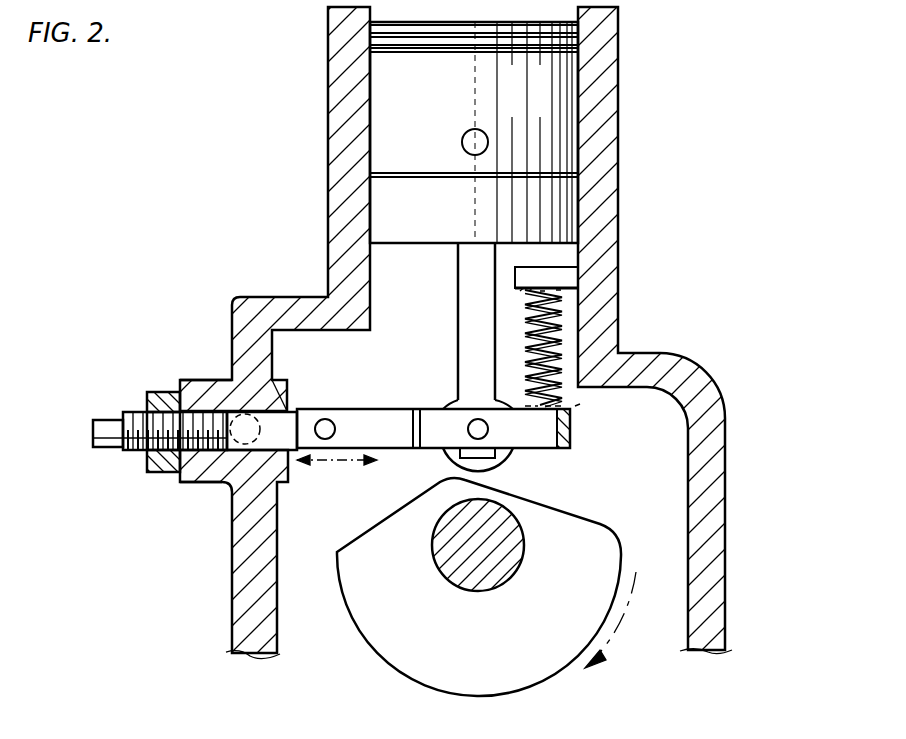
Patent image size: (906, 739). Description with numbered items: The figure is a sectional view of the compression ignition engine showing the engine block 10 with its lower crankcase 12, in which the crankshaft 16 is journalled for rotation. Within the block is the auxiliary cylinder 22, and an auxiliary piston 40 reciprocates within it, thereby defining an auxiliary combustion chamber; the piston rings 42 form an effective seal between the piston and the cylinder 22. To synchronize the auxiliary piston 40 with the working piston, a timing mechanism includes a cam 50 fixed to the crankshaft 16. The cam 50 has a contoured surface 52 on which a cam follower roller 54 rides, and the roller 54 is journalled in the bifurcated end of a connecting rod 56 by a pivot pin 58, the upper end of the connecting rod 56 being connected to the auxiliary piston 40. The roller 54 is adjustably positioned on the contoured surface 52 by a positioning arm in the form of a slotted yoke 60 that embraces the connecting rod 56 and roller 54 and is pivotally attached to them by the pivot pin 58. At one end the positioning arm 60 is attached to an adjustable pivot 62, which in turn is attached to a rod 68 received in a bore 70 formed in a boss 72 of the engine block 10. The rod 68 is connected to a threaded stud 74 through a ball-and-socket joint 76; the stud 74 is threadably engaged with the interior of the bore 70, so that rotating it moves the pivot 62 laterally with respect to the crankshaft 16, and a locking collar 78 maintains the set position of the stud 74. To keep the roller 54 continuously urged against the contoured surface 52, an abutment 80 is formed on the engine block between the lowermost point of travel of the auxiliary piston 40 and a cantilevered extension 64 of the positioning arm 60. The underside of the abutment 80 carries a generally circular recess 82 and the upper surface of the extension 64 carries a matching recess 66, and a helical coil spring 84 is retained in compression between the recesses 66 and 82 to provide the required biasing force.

The engine block 10 is at (664, 173).
The lower crankcase 12 is at (725, 582).
The crankshaft 16 is at (508, 572).
The auxiliary cylinder 22 is at (370, 286).
The auxiliary piston 40 is at (535, 99).
The piston rings 42 is at (458, 48).
The cam 50 is at (510, 643).
The contoured surface 52 is at (597, 523).
The cam follower roller 54 is at (506, 458).
The connecting rod 56 is at (458, 320).
The pivot pin 58 is at (489, 429).
The positioning arm (slotted yoke) 60 is at (388, 409).
The adjustable pivot 62 is at (336, 430).
The cantilevered extension 64 is at (575, 450).
The circular recess 66 is at (580, 404).
The rod 68 is at (290, 410).
The bore 70 is at (283, 383).
The boss 72 is at (212, 378).
The threaded stud 74 is at (138, 454).
The ball-and-socket joint 76 is at (261, 432).
The locking collar 78 is at (152, 391).
The abutment 80 is at (572, 277).
The circular recess 82 is at (525, 293).
The helical coil spring 84 is at (526, 350).